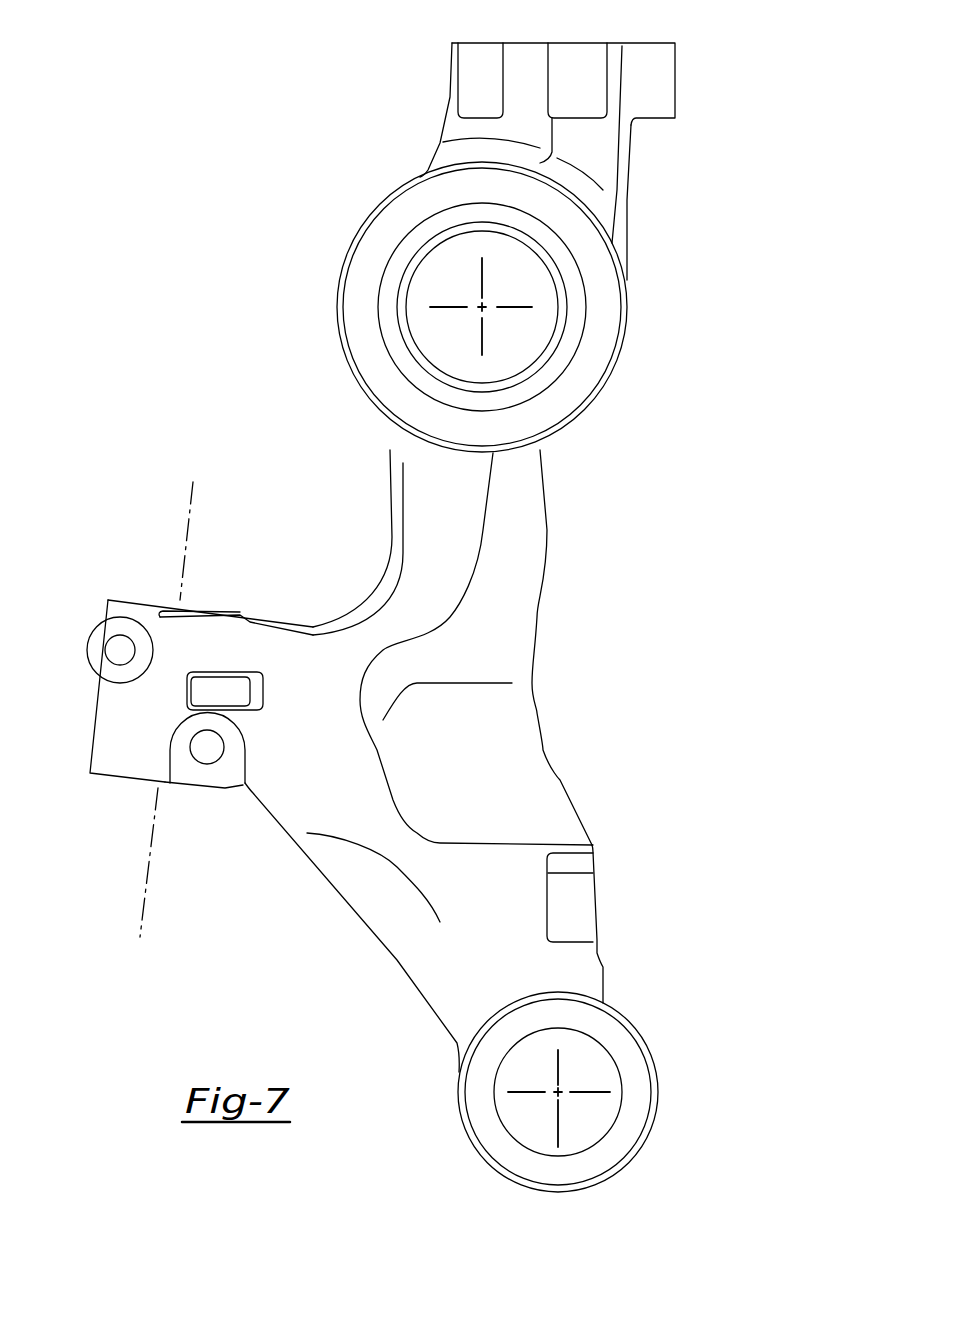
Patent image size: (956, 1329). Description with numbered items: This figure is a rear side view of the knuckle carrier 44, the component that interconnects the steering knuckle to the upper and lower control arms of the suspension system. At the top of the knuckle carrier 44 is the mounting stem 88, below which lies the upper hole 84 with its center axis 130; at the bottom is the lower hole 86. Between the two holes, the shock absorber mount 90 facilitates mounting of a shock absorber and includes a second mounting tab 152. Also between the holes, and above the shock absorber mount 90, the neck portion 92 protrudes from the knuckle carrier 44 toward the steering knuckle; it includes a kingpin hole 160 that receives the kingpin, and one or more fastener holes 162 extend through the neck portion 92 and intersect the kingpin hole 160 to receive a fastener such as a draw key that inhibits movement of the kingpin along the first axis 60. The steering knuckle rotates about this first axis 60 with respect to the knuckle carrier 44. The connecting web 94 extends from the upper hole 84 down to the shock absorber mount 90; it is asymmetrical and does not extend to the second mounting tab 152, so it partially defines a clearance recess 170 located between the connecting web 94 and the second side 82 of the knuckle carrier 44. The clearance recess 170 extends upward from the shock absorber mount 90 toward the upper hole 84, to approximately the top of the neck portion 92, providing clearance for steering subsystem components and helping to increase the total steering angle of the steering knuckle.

The knuckle carrier 44 is at (398, 124).
The mounting stem 88 is at (452, 66).
The second side 82 is at (428, 466).
The center axis 130 is at (448, 305).
The upper hole 84 is at (513, 290).
The first axis 60 is at (190, 503).
The kingpin hole 160 is at (193, 606).
The fastener holes 162 is at (117, 651).
The neck portion 92 is at (100, 700).
The connecting web 94 is at (532, 683).
The clearance recess 170 is at (540, 723).
The shock absorber mount 90 is at (597, 858).
The second mounting tab 152 is at (595, 923).
The lower hole 86 is at (586, 1075).